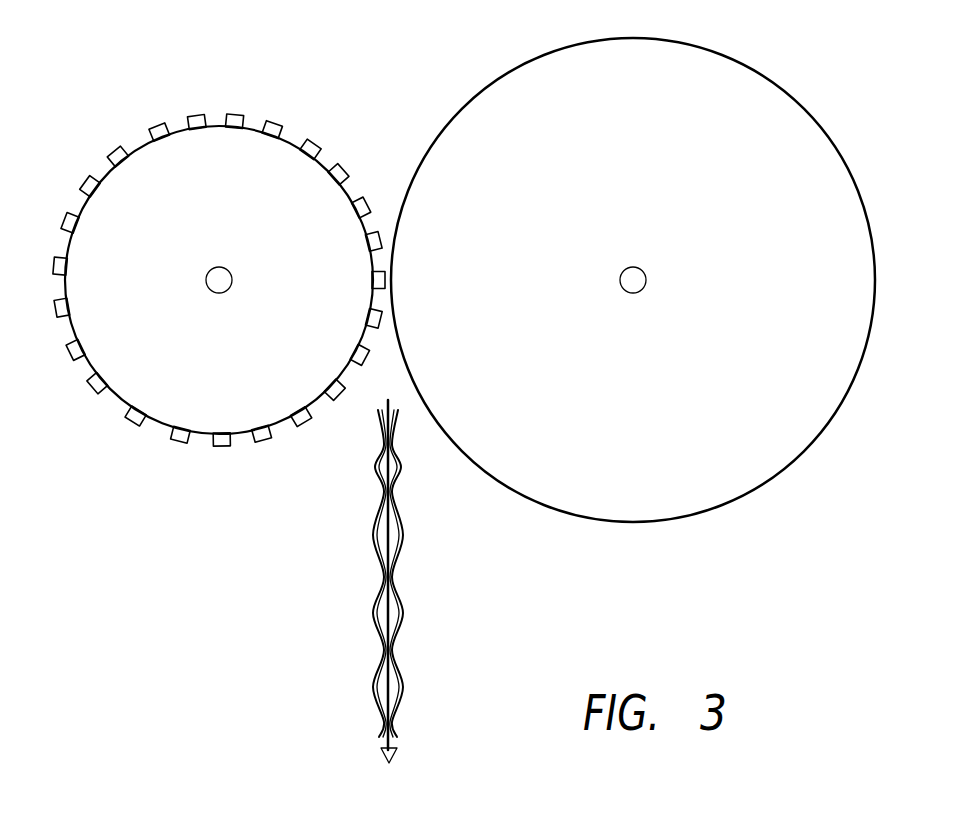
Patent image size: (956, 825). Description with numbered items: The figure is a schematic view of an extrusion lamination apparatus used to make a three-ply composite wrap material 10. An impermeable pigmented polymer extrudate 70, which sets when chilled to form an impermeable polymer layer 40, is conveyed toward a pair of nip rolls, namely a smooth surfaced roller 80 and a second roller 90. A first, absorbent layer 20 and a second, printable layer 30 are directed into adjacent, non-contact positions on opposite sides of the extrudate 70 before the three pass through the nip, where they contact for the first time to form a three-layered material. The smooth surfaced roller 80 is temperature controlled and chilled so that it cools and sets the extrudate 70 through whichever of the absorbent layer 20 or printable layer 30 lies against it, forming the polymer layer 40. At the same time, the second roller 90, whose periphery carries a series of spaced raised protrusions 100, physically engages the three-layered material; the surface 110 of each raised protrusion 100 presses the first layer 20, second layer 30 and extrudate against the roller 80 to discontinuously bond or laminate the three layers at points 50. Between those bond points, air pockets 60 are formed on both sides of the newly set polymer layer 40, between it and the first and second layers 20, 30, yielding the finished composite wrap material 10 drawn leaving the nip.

The composite wrap material 10 is at (394, 399).
The first layer 20 is at (374, 467).
The second layer 30 is at (403, 467).
The impermeable polymer layer 40 is at (397, 545).
The points 50 is at (400, 503).
The air pockets 60 is at (380, 695).
The impermeable pigmented polymer extrudate 70 is at (374, 127).
The smooth surfaced roller 80 is at (760, 72).
The second roller 90 is at (117, 203).
The raised protrusions 100 is at (156, 130).
The surface 110 is at (196, 114).